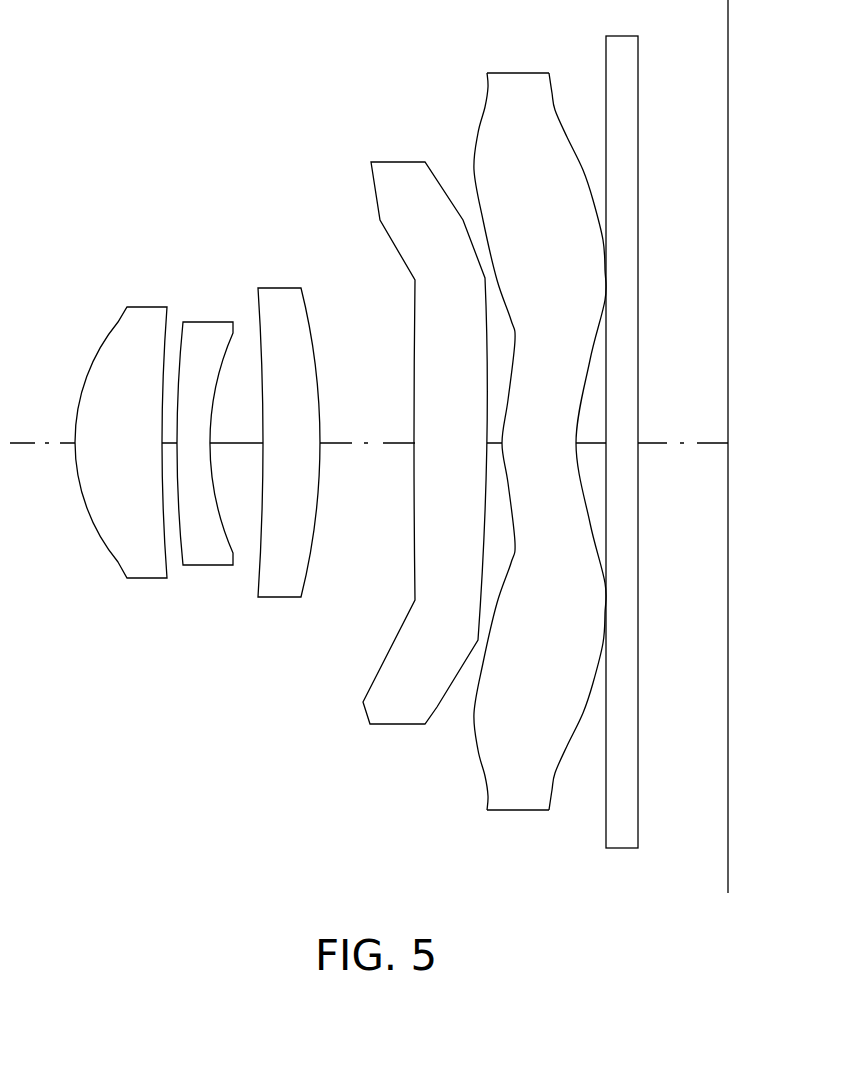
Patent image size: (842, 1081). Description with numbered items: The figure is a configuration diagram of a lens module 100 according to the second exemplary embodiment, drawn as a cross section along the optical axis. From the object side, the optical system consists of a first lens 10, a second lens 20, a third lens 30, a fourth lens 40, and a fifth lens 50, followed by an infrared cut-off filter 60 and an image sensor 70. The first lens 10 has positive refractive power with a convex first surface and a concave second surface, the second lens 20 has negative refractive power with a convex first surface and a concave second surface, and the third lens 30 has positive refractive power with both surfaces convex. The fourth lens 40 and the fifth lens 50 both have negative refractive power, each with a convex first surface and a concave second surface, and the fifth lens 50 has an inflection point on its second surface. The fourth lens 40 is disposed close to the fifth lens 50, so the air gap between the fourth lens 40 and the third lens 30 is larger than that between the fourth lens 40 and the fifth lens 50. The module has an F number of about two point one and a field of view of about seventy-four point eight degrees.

The lens module 100 is at (163, 95).
The first lens 10 is at (123, 557).
The second lens 20 is at (207, 558).
The third lens 30 is at (282, 590).
The fourth lens 40 is at (397, 713).
The fifth lens 50 is at (522, 804).
The infrared cut-off filter 60 is at (623, 840).
The image sensor 70 is at (728, 845).